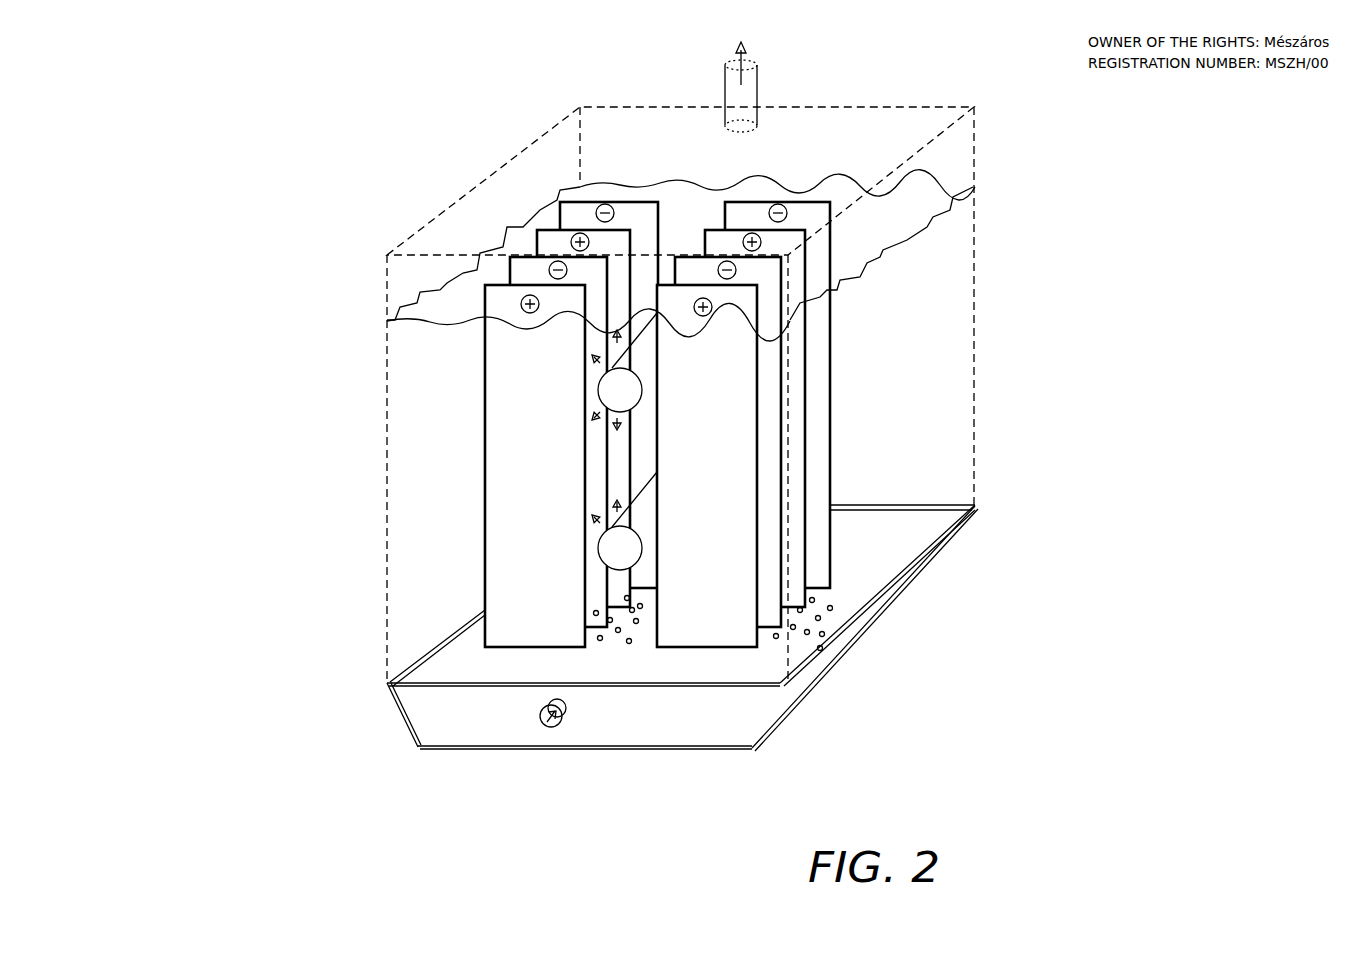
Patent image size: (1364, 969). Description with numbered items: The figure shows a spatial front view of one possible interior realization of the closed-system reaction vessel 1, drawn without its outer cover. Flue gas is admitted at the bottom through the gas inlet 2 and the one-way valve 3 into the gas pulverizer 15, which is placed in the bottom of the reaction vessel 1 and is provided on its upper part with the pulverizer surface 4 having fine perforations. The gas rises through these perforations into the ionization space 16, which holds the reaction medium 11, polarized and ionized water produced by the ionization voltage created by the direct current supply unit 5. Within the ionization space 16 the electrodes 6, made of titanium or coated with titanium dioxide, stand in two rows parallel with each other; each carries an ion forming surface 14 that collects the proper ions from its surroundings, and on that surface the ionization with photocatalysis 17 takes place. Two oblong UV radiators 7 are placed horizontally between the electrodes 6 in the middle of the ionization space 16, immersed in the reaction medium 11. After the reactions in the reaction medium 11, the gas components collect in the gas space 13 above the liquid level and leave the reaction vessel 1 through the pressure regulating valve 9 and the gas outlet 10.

The reaction vessel 1 is at (498, 158).
The gas inlet 2 is at (547, 727).
The one-way valve 3 is at (565, 712).
The pulverizer surface 4 is at (826, 627).
The direct current supply unit 5 is at (848, 203).
The electrodes 6 is at (245, 403).
The UV radiator 7 is at (313, 488).
The pressure regulating valve 9 is at (722, 126).
The gas outlet 10 is at (834, 49).
The reaction medium 11 is at (887, 283).
The gas space 13 is at (606, 118).
The ion forming surface 14 is at (588, 598).
The gas pulverizer 15 is at (746, 722).
The ionization space 16 is at (826, 428).
The ionization with photocatalysis 17 is at (588, 366).